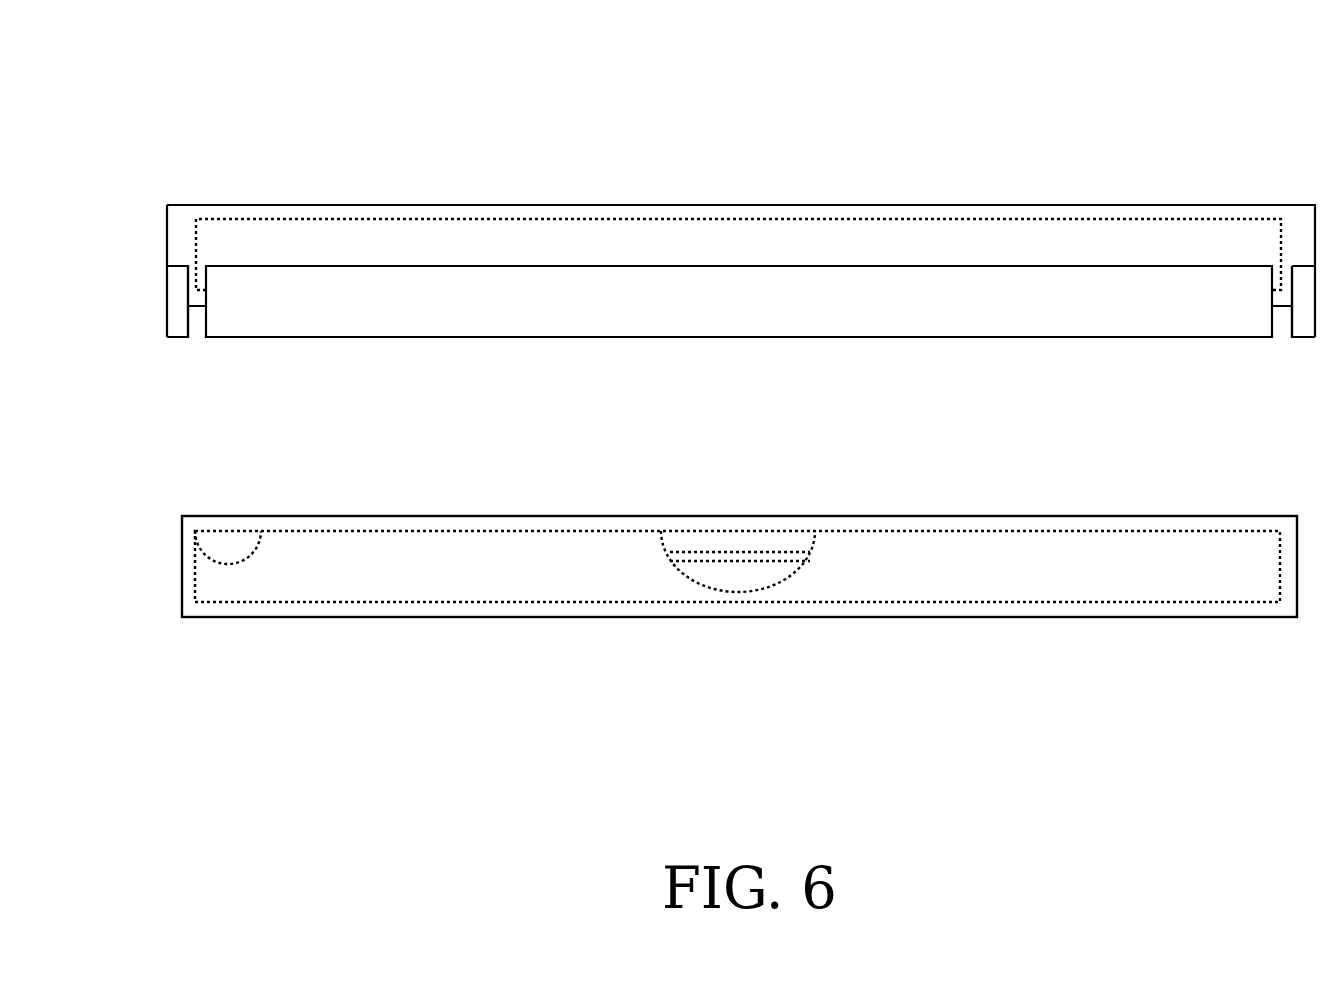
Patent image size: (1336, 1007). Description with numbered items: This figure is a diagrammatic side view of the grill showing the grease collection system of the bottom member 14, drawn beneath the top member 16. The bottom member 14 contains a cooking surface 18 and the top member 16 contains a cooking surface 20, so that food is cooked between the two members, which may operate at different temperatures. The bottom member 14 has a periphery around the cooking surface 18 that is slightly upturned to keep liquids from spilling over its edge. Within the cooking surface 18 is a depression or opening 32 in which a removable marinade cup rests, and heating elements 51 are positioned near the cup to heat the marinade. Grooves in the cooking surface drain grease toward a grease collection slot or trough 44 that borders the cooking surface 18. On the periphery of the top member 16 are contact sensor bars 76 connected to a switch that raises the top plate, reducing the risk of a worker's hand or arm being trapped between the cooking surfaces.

The bottom member 14 is at (1063, 627).
The top member 16 is at (1029, 197).
The cooking surface 18 is at (1001, 600).
The cooking surface 20 is at (578, 218).
The depression or opening 32 is at (698, 585).
The grease collection slot or trough 44 is at (244, 563).
The heating elements 51 is at (757, 568).
The contact sensor bars 76 is at (178, 333).